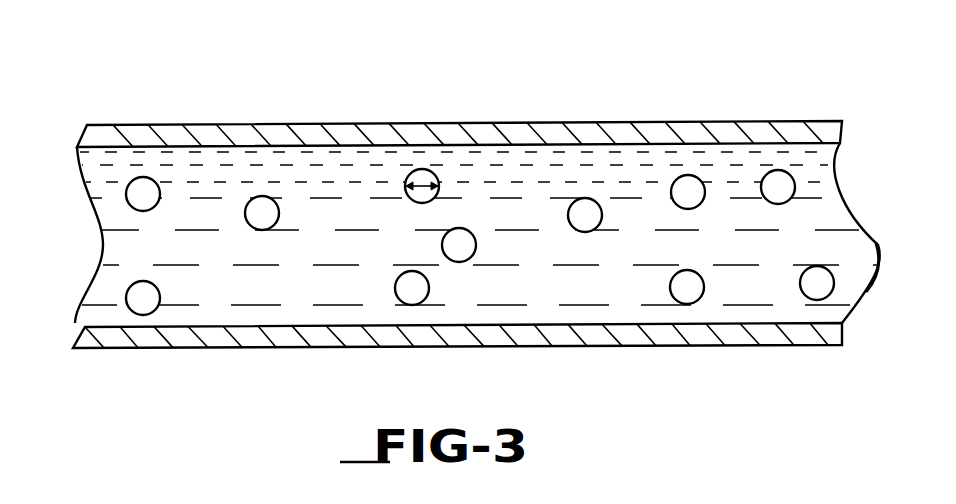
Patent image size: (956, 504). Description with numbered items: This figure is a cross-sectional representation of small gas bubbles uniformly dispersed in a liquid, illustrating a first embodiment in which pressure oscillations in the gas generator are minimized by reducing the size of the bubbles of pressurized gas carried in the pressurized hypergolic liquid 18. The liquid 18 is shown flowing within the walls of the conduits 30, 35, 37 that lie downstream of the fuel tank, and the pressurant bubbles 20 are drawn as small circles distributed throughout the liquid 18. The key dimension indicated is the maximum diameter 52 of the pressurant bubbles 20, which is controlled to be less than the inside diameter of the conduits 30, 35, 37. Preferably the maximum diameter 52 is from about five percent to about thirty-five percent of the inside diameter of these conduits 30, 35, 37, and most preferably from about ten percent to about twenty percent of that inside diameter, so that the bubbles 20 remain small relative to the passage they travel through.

The pressurized hypergolic liquid 18 is at (277, 185).
The pressurant bubbles 20 is at (140, 190).
The conduit 30 is at (457, 191).
The conduit 35 is at (457, 191).
The conduit 37 is at (623, 130).
The maximum diameter 52 is at (421, 186).